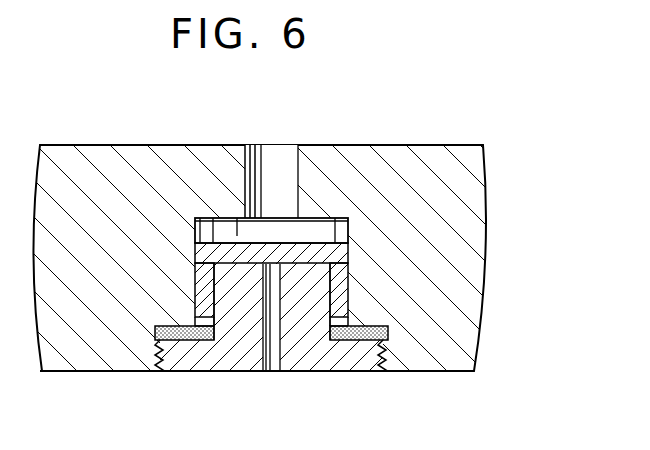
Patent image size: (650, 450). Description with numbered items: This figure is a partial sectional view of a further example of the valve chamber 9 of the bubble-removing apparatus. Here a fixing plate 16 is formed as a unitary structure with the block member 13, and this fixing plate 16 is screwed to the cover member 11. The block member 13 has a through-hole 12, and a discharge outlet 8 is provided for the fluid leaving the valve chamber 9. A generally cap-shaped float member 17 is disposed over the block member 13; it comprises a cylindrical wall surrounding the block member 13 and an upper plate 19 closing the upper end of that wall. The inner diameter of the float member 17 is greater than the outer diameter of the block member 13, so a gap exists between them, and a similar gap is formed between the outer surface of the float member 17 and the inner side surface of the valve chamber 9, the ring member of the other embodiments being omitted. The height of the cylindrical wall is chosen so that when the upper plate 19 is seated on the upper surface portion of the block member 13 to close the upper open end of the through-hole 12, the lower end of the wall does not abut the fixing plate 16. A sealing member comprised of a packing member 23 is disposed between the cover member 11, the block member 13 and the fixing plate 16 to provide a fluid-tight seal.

The cover member 11 is at (105, 192).
The discharge outlet 8 is at (298, 163).
The valve chamber 9 is at (225, 232).
The upper plate 19 is at (335, 240).
The float member 17 is at (356, 288).
The block member 13 is at (233, 318).
The through-hole 12 is at (275, 367).
The fixing plate 16 is at (345, 362).
The packing member 23 is at (388, 338).